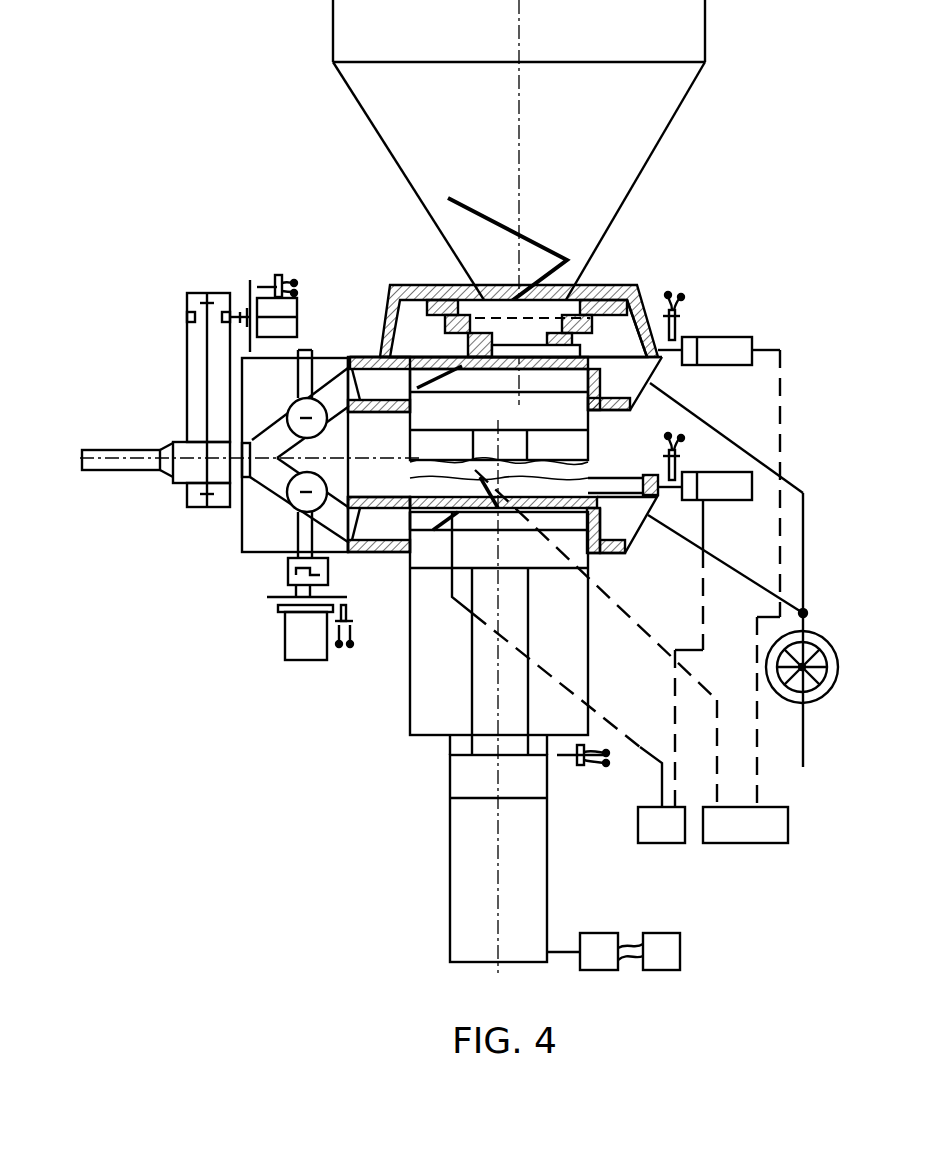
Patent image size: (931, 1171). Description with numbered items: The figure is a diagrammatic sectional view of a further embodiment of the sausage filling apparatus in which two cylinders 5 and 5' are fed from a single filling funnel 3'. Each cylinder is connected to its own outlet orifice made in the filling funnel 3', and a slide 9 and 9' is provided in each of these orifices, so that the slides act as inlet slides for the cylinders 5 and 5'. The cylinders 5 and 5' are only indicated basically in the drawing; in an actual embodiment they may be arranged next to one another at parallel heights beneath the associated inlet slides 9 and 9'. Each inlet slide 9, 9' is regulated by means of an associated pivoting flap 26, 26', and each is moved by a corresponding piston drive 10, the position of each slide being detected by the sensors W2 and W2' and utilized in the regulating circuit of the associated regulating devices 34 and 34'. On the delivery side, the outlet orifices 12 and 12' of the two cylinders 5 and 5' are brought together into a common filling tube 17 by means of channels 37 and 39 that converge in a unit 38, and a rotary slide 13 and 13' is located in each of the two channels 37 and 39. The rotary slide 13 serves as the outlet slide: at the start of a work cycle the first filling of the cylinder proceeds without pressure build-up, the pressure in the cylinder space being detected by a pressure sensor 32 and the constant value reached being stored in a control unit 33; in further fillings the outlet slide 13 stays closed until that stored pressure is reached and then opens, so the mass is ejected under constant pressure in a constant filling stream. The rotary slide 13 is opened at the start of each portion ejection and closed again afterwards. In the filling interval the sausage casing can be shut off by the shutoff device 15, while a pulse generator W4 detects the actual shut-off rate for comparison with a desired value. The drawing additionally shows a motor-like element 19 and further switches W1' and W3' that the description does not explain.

The filling funnel 3' is at (540, 161).
The inlet slide 9 is at (653, 280).
The inlet slide 9' is at (639, 542).
The piston drive 10 is at (740, 335).
The unit 38 is at (345, 355).
The outlet orifice 12 is at (369, 308).
The outlet orifice 12' is at (379, 554).
The pivoting flap 26 is at (519, 281).
The pivoting flap 26' is at (407, 615).
The cylinder 5 is at (607, 582).
The cylinder 5' is at (606, 718).
The rotary slide 13 is at (219, 364).
The rotary slide 13' is at (222, 533).
The channel 37 is at (285, 410).
The channel 39 is at (280, 475).
The shutoff device 15 is at (187, 405).
The filling tube 17 is at (137, 471).
The motor 19 is at (813, 630).
The pressure sensor 32 is at (598, 972).
The control unit 33 is at (664, 972).
The regulating device 34 is at (747, 852).
The regulating device 34' is at (663, 852).
The limit switch W1' is at (585, 771).
The sensor W2 is at (696, 314).
The sensor W2' is at (699, 454).
The limit switch W3' is at (340, 632).
The pulse generator W4 is at (272, 301).